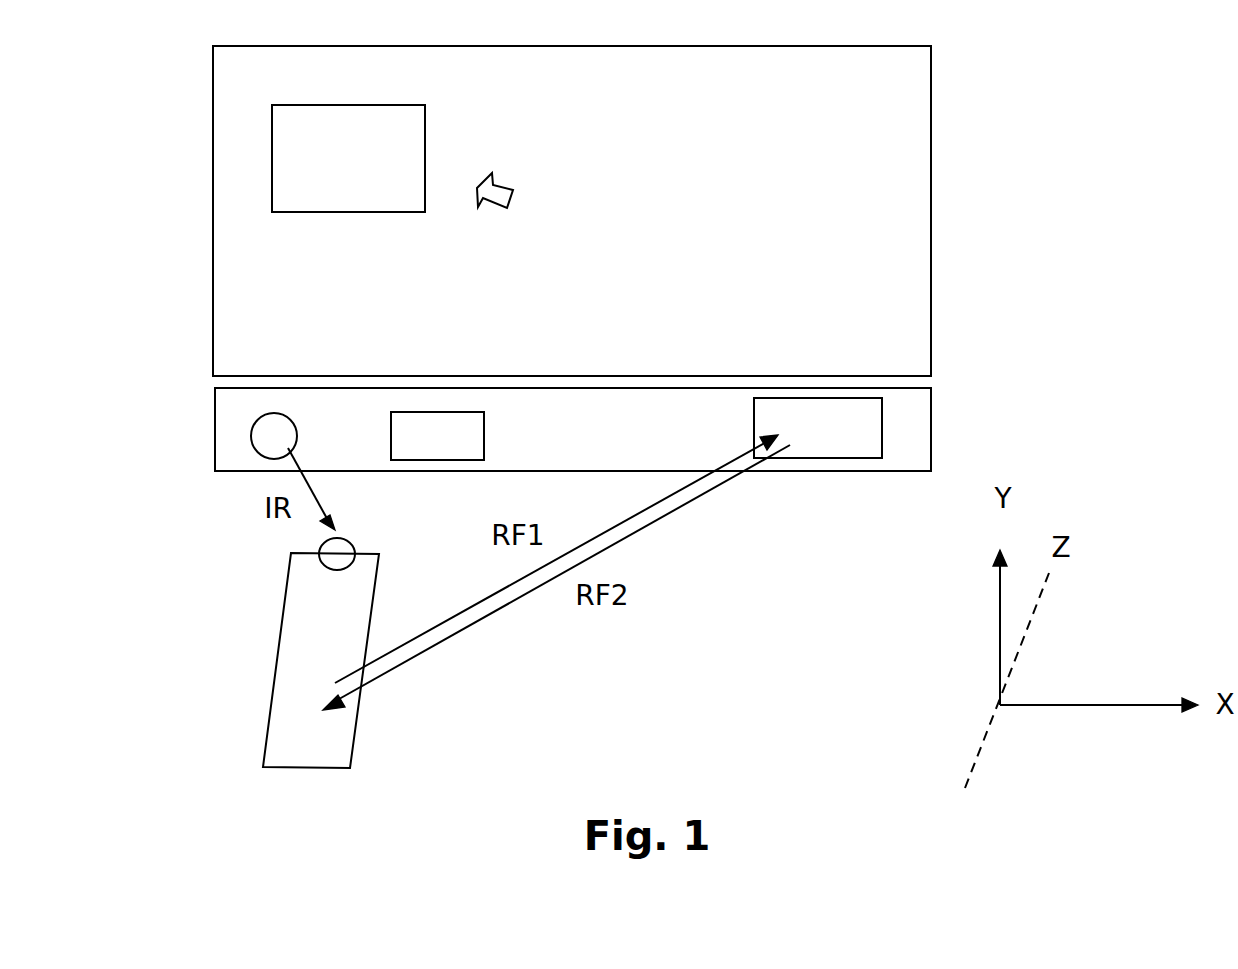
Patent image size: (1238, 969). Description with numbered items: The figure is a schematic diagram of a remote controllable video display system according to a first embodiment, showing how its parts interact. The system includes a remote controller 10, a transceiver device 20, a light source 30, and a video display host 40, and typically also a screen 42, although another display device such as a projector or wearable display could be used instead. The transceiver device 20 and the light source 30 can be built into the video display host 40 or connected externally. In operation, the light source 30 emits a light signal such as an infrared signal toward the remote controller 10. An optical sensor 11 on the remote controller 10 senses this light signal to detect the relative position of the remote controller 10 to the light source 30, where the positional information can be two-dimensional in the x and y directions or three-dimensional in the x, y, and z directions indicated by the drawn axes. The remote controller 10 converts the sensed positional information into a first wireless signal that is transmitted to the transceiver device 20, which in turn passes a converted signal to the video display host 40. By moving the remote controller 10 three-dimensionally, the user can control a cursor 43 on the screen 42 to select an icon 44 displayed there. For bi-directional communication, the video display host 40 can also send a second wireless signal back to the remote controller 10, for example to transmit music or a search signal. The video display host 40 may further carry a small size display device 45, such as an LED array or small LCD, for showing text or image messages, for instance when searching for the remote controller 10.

The remote controller 10 is at (290, 746).
The optical sensor 11 is at (357, 540).
The transceiver device 20 is at (800, 446).
The light source 30 is at (251, 437).
The video display host 40 is at (554, 446).
The screen 42 is at (864, 353).
The cursor 43 is at (530, 187).
The icon 44 is at (371, 201).
The small size display device 45 is at (424, 412).